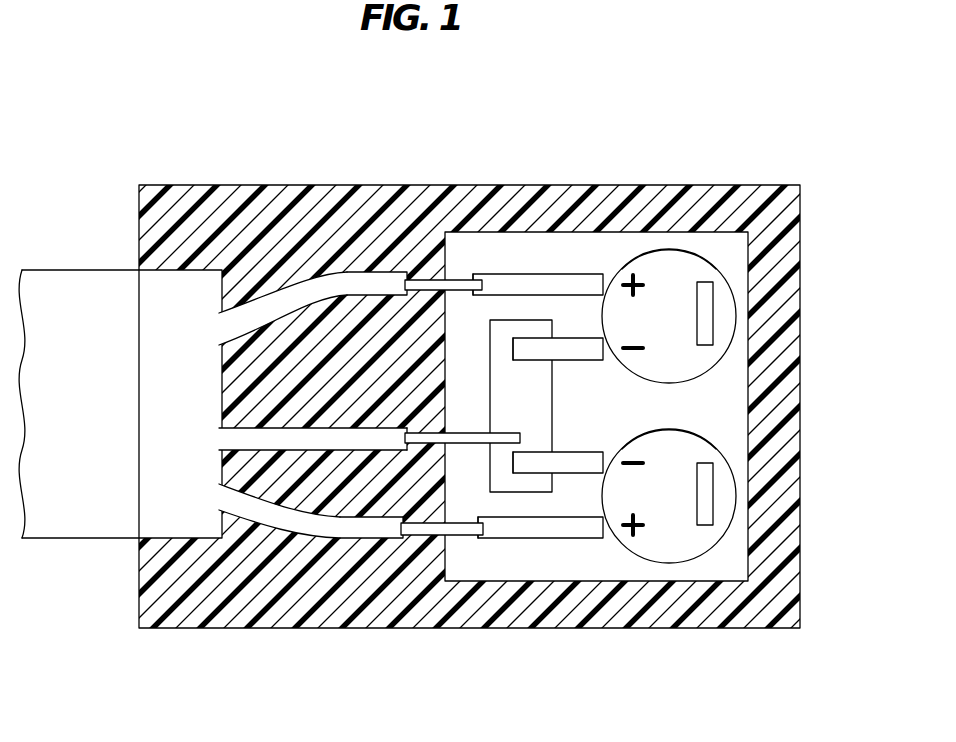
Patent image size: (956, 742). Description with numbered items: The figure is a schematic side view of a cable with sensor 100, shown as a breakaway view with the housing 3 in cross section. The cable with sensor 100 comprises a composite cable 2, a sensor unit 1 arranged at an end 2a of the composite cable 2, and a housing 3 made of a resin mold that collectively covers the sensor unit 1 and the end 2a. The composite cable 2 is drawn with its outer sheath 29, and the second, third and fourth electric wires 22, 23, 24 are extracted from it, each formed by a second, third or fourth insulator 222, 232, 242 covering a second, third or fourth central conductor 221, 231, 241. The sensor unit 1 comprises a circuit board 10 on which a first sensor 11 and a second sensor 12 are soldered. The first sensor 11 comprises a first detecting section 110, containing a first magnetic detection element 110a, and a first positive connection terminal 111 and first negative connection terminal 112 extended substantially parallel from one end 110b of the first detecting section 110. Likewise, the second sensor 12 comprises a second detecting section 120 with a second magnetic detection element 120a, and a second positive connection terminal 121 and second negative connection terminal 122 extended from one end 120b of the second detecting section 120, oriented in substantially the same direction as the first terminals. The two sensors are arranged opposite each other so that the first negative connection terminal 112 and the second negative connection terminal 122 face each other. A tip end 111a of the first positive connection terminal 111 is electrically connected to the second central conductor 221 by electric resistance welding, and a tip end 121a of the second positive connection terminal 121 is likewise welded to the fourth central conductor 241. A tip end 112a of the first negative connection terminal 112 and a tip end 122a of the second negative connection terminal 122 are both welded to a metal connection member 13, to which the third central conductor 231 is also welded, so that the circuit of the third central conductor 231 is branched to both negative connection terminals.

The cable with sensor 100 is at (682, 95).
The sensor unit 1 is at (659, 196).
The circuit board 10 is at (723, 231).
The first sensor 11 is at (734, 254).
The first detecting section 110 is at (735, 327).
The first magnetic detection element 110a is at (713, 300).
The one end of the first detecting section 110b is at (640, 253).
The first positive connection terminal 111 is at (560, 274).
The tip end of the first positive connection terminal 111a is at (481, 274).
The first negative connection terminal 112 is at (580, 338).
The tip end of the first negative connection terminal 112a is at (528, 347).
The second sensor 12 is at (733, 441).
The second detecting section 120 is at (735, 510).
The second magnetic detection element 120a is at (713, 485).
The one end of the second detecting section 120b is at (653, 430).
The second positive connection terminal 121 is at (595, 518).
The tip end of the second positive connection terminal 121a is at (478, 538).
The second negative connection terminal 122 is at (597, 452).
The tip end of the second negative connection terminal 122a is at (528, 463).
The connection member 13 is at (500, 387).
The composite cable 2 is at (90, 242).
The outer sheath 29 is at (50, 270).
The end of the composite cable 2a is at (436, 280).
The second electric wire 22 is at (382, 123).
The second central conductor 221 is at (403, 272).
The second insulator 222 is at (352, 272).
The third electric wire 23 is at (275, 689).
The third central conductor 231 is at (305, 450).
The third insulator 232 is at (277, 452).
The fourth electric wire 24 is at (408, 689).
The fourth central conductor 241 is at (420, 535).
The fourth insulator 242 is at (400, 450).
The housing 3 is at (433, 268).